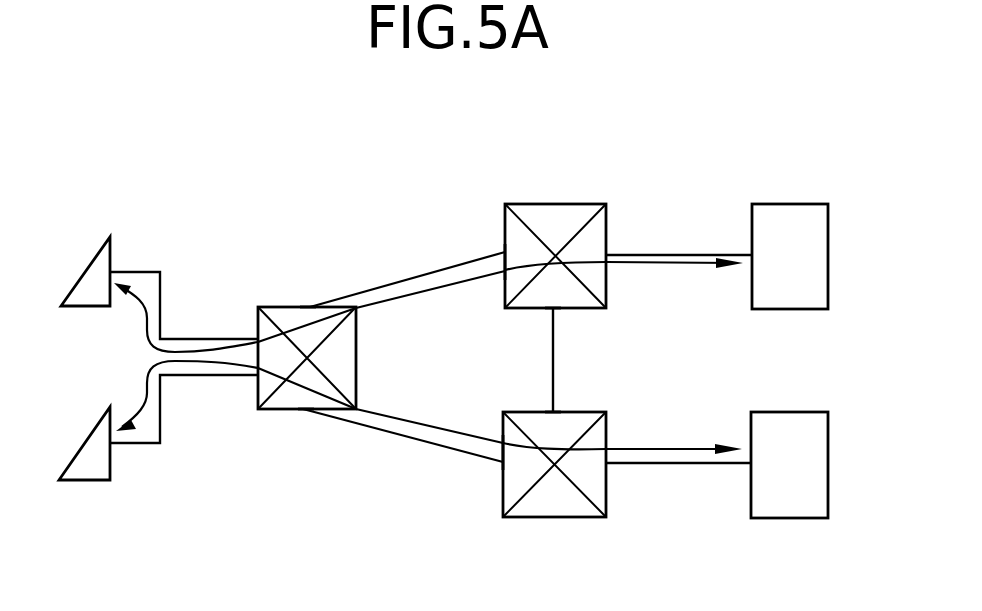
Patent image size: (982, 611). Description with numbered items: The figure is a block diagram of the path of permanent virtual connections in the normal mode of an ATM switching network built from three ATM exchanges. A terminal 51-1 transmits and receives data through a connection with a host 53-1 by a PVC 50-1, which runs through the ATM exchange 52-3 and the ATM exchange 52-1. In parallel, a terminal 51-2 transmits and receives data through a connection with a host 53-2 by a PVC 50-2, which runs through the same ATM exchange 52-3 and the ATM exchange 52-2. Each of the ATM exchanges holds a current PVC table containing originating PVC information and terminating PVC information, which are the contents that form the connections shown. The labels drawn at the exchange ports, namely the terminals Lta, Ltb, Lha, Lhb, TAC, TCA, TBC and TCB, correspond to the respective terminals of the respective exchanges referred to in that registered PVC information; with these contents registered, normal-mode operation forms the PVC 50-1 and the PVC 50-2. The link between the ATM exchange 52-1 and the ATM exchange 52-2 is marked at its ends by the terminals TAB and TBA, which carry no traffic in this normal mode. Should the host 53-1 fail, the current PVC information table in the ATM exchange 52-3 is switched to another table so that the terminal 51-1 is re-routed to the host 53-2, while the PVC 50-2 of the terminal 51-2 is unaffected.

The terminal 51-1 is at (90, 257).
The terminal 51-2 is at (80, 480).
The ATM exchange 52-1 is at (583, 203).
The ATM exchange 52-2 is at (557, 517).
The ATM exchange 52-3 is at (310, 307).
The host 53-1 is at (800, 203).
The host 53-2 is at (785, 518).
The PVC 50-1 is at (408, 293).
The PVC 50-2 is at (403, 422).
The terminal of exchange TCA is at (306, 305).
The terminal of exchange TCB is at (306, 412).
The terminal of exchange TAC is at (503, 252).
The terminal of exchange TBC is at (500, 463).
The coupler terminal TAB is at (555, 312).
The coupler terminal TBA is at (553, 410).
The terminal of exchange Lta is at (257, 338).
The terminal of exchange Ltb is at (257, 378).
The terminal of exchange Lha is at (607, 253).
The terminal of exchange Lhb is at (607, 467).